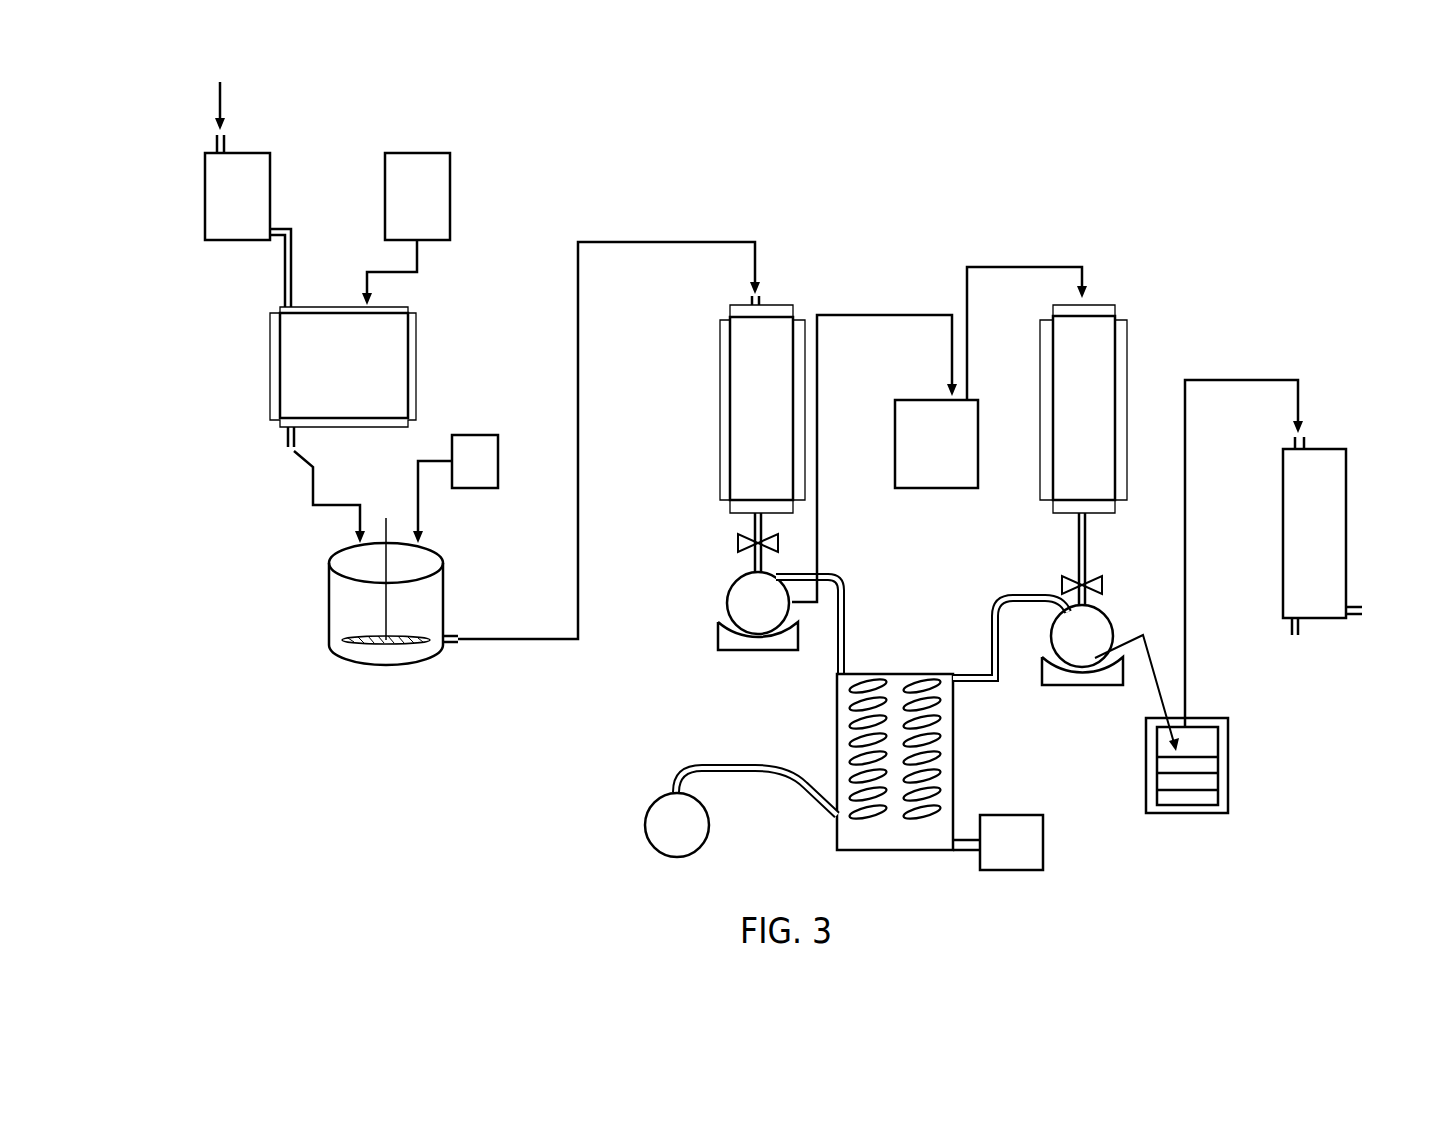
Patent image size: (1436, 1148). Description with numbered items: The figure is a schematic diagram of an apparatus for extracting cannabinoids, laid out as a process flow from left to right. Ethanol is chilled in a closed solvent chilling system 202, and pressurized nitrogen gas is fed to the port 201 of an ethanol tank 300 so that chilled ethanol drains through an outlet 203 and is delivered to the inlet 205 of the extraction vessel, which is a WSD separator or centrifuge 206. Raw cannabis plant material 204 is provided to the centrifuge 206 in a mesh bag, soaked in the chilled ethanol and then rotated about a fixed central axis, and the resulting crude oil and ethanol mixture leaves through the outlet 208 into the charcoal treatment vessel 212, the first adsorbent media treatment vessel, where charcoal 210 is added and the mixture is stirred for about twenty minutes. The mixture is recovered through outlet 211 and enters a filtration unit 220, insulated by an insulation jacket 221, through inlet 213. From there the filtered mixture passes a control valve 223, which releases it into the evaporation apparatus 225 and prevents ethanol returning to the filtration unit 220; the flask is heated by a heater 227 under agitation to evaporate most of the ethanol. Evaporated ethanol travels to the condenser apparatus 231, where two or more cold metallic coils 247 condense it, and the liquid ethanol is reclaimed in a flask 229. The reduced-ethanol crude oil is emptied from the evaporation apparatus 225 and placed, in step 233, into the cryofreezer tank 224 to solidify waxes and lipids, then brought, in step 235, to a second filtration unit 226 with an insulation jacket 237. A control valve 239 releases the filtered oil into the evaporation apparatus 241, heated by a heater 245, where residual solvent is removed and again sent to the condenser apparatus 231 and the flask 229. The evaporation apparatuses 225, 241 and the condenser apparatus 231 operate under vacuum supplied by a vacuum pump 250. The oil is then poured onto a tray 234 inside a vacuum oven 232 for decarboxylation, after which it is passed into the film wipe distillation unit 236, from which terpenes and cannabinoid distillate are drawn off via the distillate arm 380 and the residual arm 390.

The port 201 is at (215, 142).
The closed solvent chilling system 202 is at (272, 162).
The outlet 203 is at (280, 225).
The raw cannabis plant material 204 is at (452, 190).
The inlet 205 is at (283, 298).
The centrifuge 206 is at (270, 335).
The outlet 208 is at (285, 440).
The charcoal 210 is at (483, 433).
The outlet 211 is at (452, 645).
The charcoal treatment vessel 212 is at (330, 563).
The inlet 213 is at (750, 298).
The filtration unit 220 is at (730, 318).
The insulation jacket 221 is at (720, 390).
The control valve 223 is at (738, 540).
The cryofreezer tank 224 is at (918, 398).
The evaporation apparatus 225 is at (728, 598).
The filtration unit 226 is at (1097, 305).
The heater 227 is at (718, 637).
The flask 229 is at (648, 804).
The condenser apparatus 231 is at (837, 725).
The vacuum oven 232 is at (1208, 718).
The step 233 is at (883, 315).
The tray 234 is at (1207, 757).
The step 235 is at (1023, 265).
The film wipe distillation unit 236 is at (1330, 446).
The insulation jacket 237 is at (1128, 342).
The control valve 239 is at (1062, 580).
The evaporation apparatus 241 is at (1105, 615).
The heater 245 is at (1062, 687).
The cold metallic coils 247 is at (933, 792).
The vacuum pump 250 is at (1045, 848).
The ethanol tank 300 is at (255, 150).
The distillate arm 380 is at (1302, 630).
The residual arm 390 is at (1355, 608).